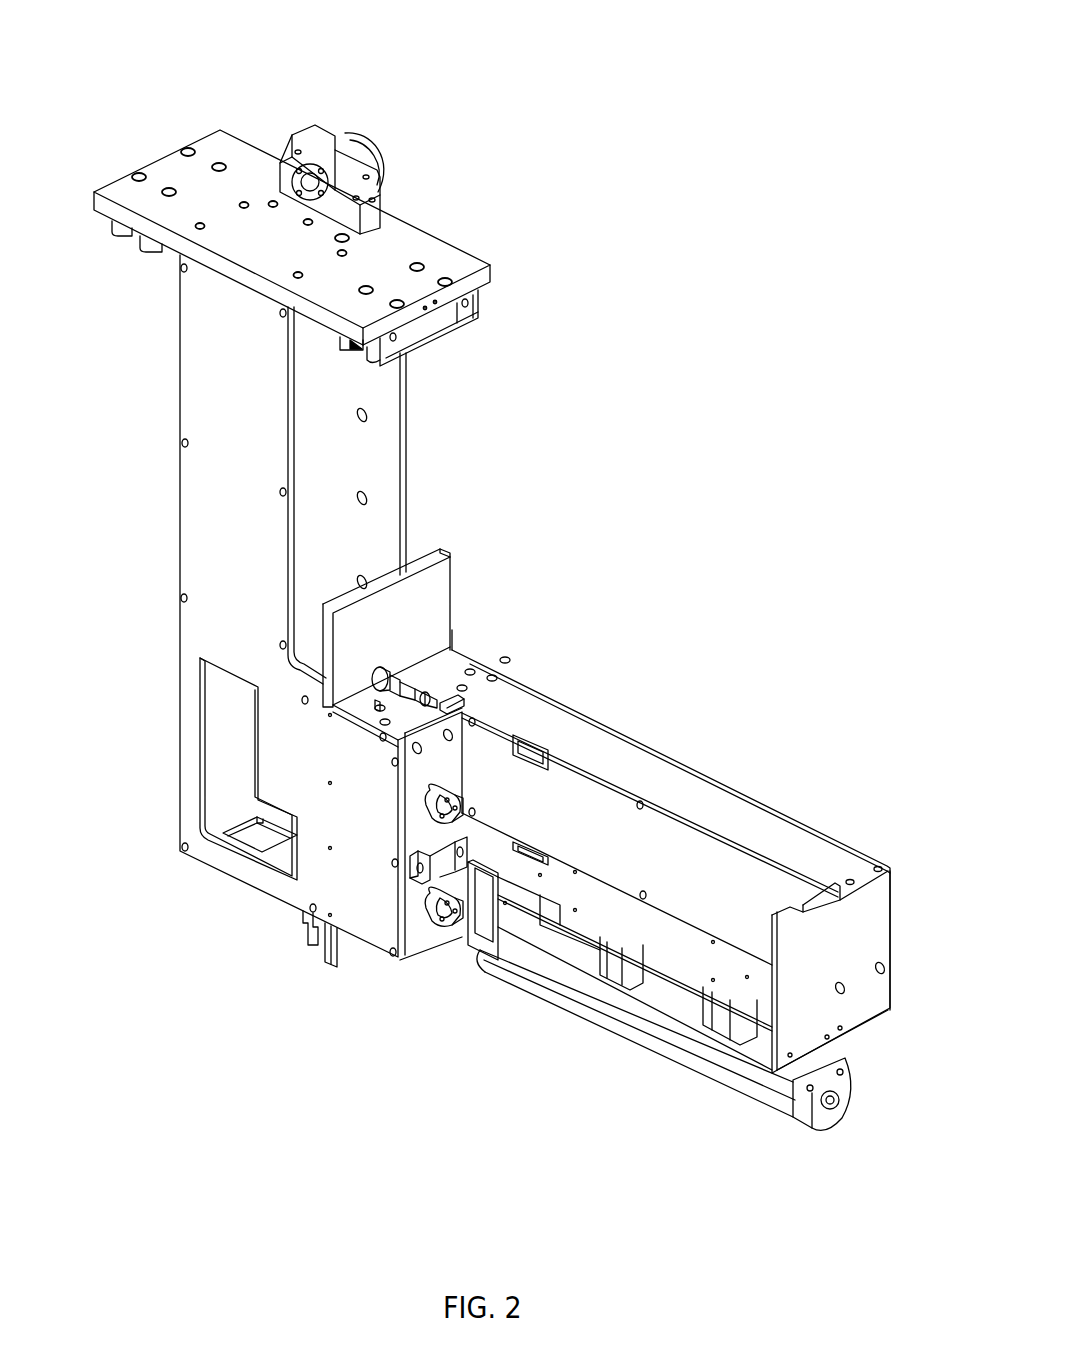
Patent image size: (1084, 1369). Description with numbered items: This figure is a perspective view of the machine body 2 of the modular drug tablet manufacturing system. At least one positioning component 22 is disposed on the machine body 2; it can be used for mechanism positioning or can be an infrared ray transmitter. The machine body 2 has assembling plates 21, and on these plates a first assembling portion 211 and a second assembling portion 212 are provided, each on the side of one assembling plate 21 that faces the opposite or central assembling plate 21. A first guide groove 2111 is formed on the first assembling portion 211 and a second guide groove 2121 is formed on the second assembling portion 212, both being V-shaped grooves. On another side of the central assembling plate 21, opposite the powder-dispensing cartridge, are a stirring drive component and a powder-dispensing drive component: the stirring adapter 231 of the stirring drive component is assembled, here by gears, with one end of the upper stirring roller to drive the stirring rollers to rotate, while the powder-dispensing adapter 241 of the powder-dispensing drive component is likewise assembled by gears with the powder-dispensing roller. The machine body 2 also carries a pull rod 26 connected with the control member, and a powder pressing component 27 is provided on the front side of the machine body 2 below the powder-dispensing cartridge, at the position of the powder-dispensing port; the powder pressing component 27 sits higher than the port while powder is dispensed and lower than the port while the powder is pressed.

The machine body 2 is at (690, 355).
The assembling plate 21 is at (453, 762).
The first assembling portion 211 is at (420, 873).
The first guide groove 2111 is at (415, 888).
The second assembling portion 212 is at (463, 715).
The second guide groove 2121 is at (447, 703).
The positioning component 22 is at (328, 148).
The stirring adapter 231 is at (425, 803).
The powder-dispensing adapter 241 is at (446, 927).
The pull rod 26 is at (427, 688).
The powder pressing component 27 is at (690, 1055).